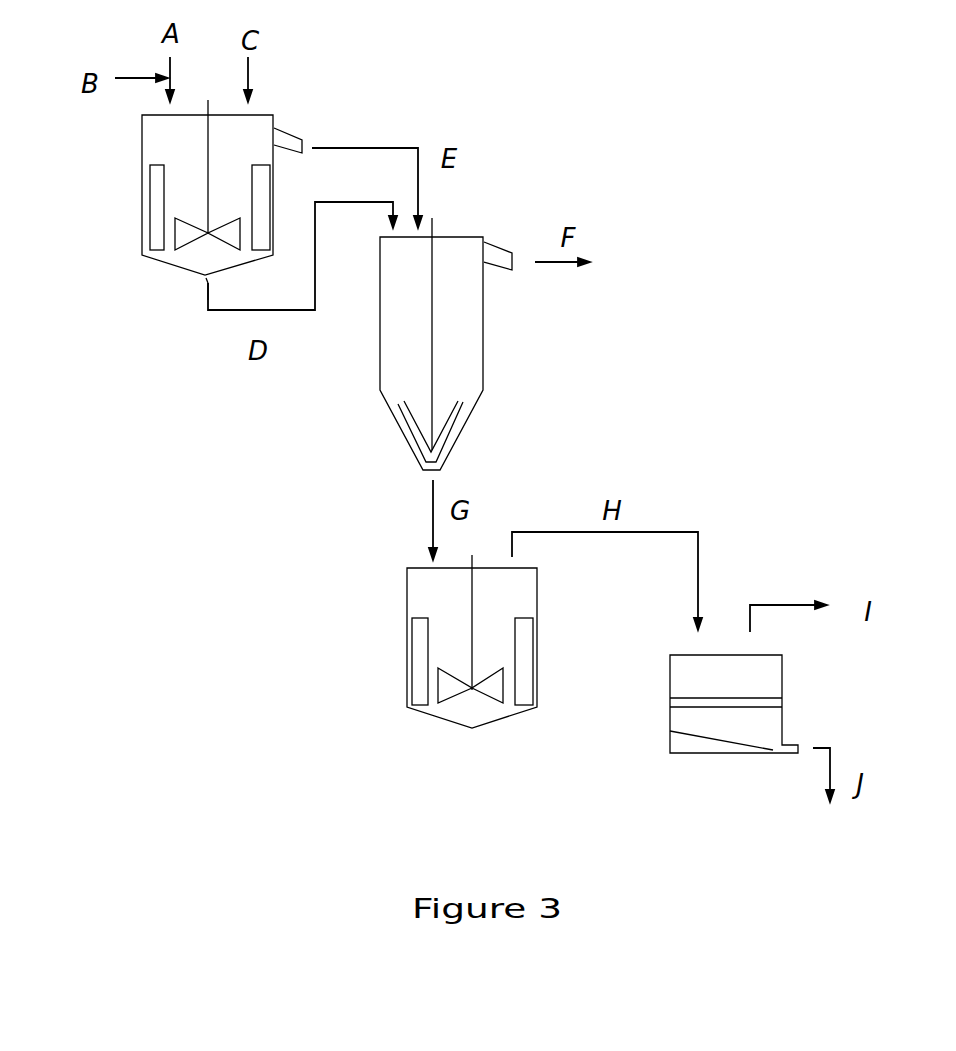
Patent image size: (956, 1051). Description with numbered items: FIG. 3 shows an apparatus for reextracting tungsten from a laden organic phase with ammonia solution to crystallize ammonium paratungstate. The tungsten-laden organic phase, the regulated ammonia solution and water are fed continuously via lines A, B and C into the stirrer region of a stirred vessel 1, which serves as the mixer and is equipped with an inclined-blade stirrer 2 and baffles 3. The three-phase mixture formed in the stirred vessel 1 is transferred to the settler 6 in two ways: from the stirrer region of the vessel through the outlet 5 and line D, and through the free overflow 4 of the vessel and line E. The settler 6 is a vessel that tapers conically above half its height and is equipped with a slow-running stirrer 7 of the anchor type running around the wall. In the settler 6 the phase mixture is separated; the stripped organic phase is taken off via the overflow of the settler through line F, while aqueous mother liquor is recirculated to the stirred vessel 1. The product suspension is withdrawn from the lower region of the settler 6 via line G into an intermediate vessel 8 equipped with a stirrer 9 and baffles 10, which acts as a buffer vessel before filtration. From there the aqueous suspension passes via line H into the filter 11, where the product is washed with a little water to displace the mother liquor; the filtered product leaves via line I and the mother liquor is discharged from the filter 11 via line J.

The stirred vessel 1 is at (155, 137).
The stirrer 2 is at (183, 245).
The baffles 3 is at (155, 205).
The free overflow 4 is at (290, 135).
The outlet 5 is at (207, 283).
The settler 6 is at (470, 335).
The slow-running stirrer 7 is at (410, 428).
The intermediate vessel 8 is at (415, 593).
The stirrer 9 is at (447, 697).
The baffles 10 is at (407, 673).
The filter 11 is at (773, 682).